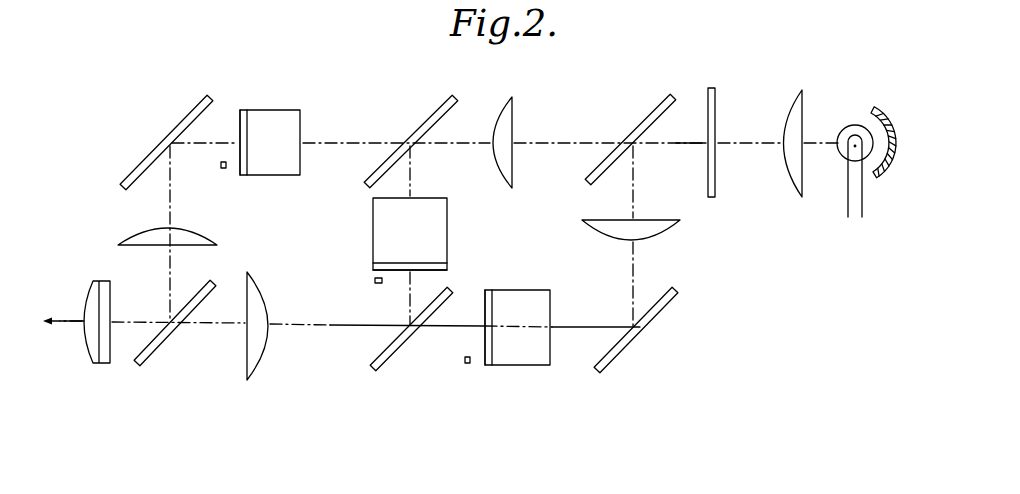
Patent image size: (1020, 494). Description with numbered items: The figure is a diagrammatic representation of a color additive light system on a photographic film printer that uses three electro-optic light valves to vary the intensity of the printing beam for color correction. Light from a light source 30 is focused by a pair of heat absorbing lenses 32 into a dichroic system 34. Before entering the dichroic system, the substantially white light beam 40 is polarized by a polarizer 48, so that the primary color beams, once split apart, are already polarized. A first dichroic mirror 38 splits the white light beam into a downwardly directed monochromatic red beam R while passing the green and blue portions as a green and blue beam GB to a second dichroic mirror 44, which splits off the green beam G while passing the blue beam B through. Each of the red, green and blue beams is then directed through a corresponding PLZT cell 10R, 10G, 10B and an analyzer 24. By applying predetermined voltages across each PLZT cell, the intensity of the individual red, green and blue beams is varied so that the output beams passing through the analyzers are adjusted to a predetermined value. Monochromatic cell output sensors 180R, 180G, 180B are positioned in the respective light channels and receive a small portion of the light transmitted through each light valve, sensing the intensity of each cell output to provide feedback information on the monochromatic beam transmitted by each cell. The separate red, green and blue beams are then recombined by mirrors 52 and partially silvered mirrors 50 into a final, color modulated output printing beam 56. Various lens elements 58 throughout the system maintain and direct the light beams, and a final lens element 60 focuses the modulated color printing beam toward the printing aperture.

The PLZT cell 10B is at (272, 109).
The PLZT cell 10G is at (453, 228).
The PLZT cell 10R is at (525, 289).
The analyzer 24 is at (247, 176).
The light source 30 is at (862, 125).
The heat absorbing lenses 32 is at (795, 186).
The dichroic system 34 is at (695, 242).
The first dichroic mirror 38 is at (651, 117).
The white light beam 40 is at (674, 143).
The second dichroic mirror 44 is at (435, 113).
The polarizer 48 is at (716, 189).
The partially silvered mirrors 50 is at (158, 347).
The mirrors 52 is at (190, 117).
The output printing beam 56 is at (123, 321).
The lens elements 58 is at (511, 96).
The final lens element 60 is at (88, 342).
The monochromatic cell output sensor 180B is at (226, 170).
The monochromatic cell output sensor 180G is at (373, 280).
The monochromatic cell output sensor 180R is at (467, 366).
The blue beam B is at (352, 143).
The green beam G is at (413, 172).
The red beam R is at (633, 178).
The green and blue beam GB is at (533, 143).